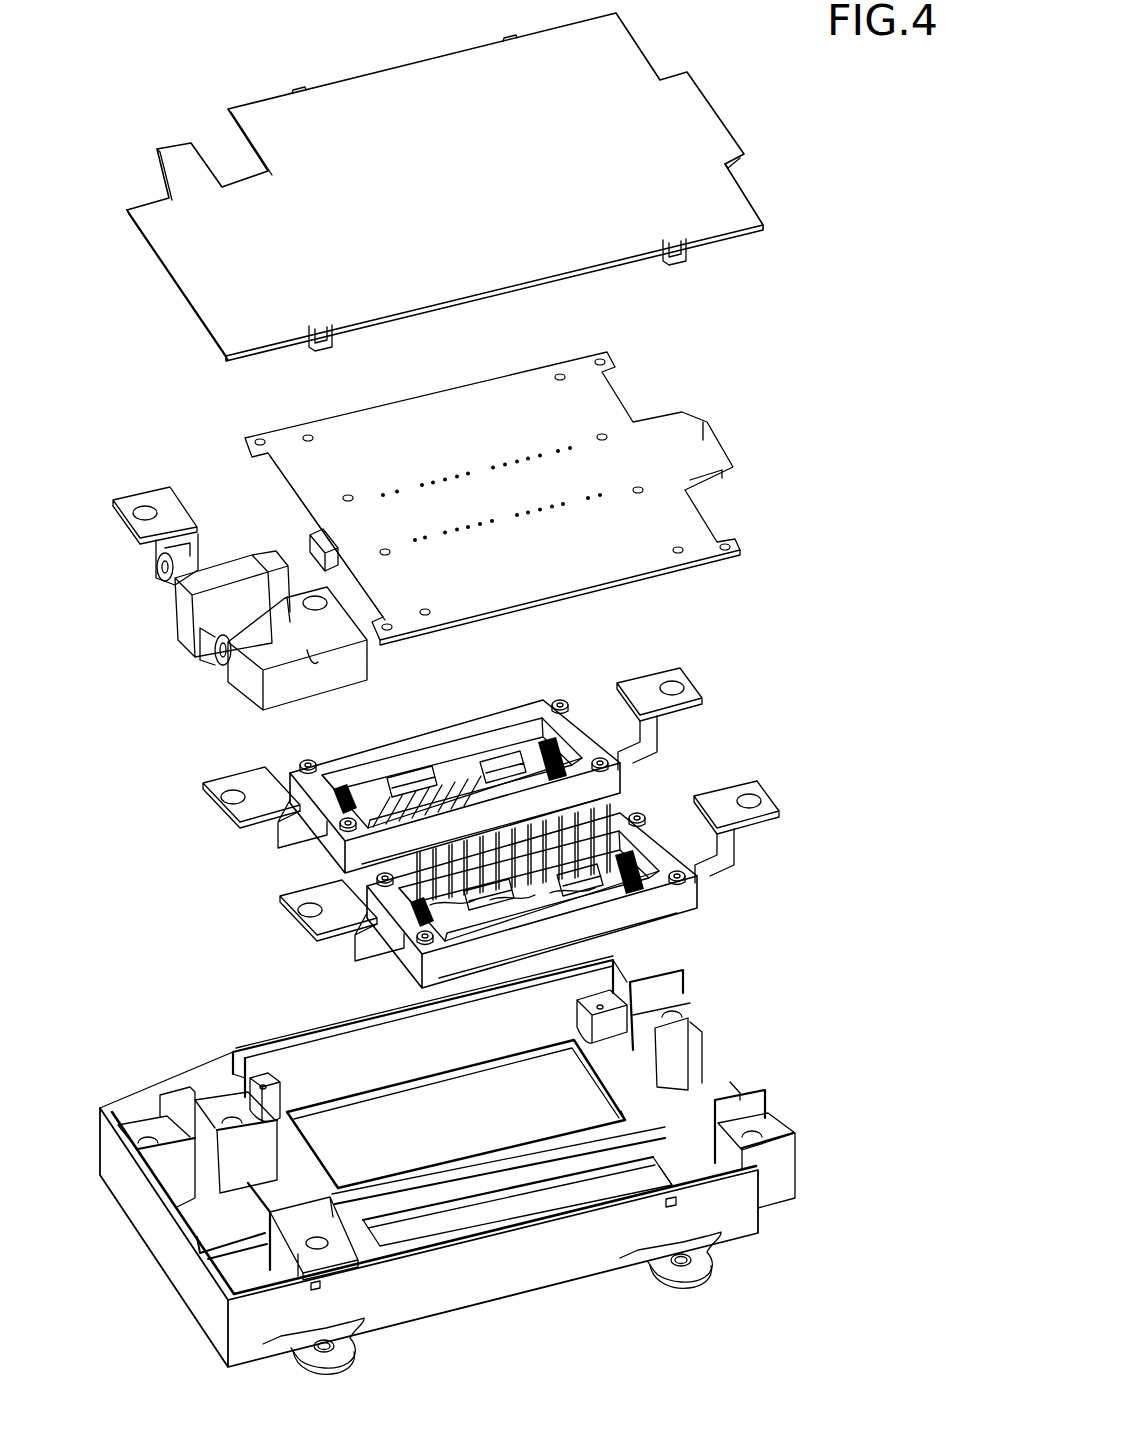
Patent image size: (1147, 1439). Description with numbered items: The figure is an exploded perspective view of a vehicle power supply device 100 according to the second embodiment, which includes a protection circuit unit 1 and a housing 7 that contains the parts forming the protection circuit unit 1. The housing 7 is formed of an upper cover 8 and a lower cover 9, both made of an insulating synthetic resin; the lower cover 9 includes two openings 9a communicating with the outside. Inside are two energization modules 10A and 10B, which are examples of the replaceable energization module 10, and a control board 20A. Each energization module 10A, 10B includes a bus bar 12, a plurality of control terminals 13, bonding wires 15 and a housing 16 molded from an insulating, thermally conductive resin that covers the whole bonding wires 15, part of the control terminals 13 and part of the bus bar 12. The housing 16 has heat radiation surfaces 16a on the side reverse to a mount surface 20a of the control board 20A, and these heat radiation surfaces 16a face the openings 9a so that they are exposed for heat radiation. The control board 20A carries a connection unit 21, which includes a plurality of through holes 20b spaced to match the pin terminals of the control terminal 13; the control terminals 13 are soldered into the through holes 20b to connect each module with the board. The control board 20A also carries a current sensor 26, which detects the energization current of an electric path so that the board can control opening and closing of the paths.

The vehicle power supply device 100 is at (241, 74).
The protection circuit unit 1 is at (914, 325).
The housing 7 is at (489, 693).
The upper cover 8 is at (747, 207).
The lower cover 9 is at (797, 1175).
The openings 9a is at (659, 1166).
The control board 20A is at (509, 479).
The mount surface 20a is at (682, 527).
The through holes 20b is at (494, 428).
The connection unit 21 is at (600, 493).
The current sensor 26 is at (182, 636).
The energization module 10 is at (561, 809).
The energization module 10A is at (790, 797).
The energization module 10B is at (708, 669).
The bus bar 12 is at (657, 673).
The control terminal 13 is at (490, 837).
The bonding wires 15 is at (460, 787).
The housing 16 is at (385, 742).
The heat radiation surfaces 16a is at (617, 810).